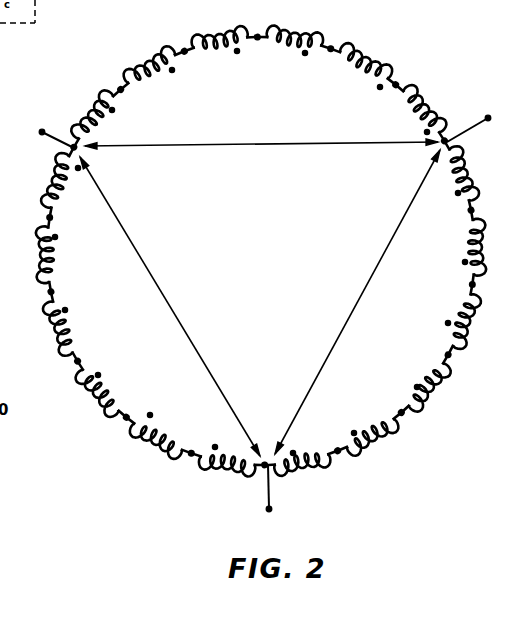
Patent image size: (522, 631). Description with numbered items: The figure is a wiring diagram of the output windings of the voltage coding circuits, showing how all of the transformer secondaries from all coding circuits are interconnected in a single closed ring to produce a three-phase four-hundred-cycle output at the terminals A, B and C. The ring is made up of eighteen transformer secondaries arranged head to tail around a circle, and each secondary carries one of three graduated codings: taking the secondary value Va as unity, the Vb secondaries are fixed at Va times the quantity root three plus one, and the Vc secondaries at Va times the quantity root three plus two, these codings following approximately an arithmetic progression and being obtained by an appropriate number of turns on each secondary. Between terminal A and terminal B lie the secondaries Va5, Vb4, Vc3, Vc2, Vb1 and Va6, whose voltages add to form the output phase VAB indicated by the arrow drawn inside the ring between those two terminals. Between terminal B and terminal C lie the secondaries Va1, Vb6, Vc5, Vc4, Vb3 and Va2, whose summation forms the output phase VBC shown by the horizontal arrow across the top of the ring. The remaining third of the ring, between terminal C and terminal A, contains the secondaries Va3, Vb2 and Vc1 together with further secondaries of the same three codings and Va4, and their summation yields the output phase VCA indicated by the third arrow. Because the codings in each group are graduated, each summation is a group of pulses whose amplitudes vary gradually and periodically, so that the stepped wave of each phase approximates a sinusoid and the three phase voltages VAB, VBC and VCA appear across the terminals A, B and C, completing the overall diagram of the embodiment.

The transformer secondary Va1 is at (83, 114).
The transformer secondary Va2 is at (429, 109).
The transformer secondary Va3 is at (474, 173).
The transformer secondary Va4 is at (302, 474).
The transformer secondary Va5 is at (227, 472).
The transformer secondary Va6 is at (51, 180).
The transformer secondary Vb1 is at (31, 254).
The transformer secondary Vb2 is at (492, 247).
The transformer secondary Vb3 is at (369, 65).
The transformer secondary Vb4 is at (152, 444).
The transformer secondary Vb6 is at (258, 259).
The transformer secondary Vc1 is at (456, 353).
The transformer secondary Vc2 is at (47, 328).
The transformer secondary Vc3 is at (88, 393).
The transformer secondary Vc4 is at (294, 35).
The transformer secondary Vc5 is at (219, 35).
The output terminal A is at (271, 499).
The output terminal B is at (49, 134).
The output terminal C is at (474, 122).
The output phase VAB is at (170, 306).
The output phase VBC is at (261, 136).
The output phase VCA is at (357, 302).